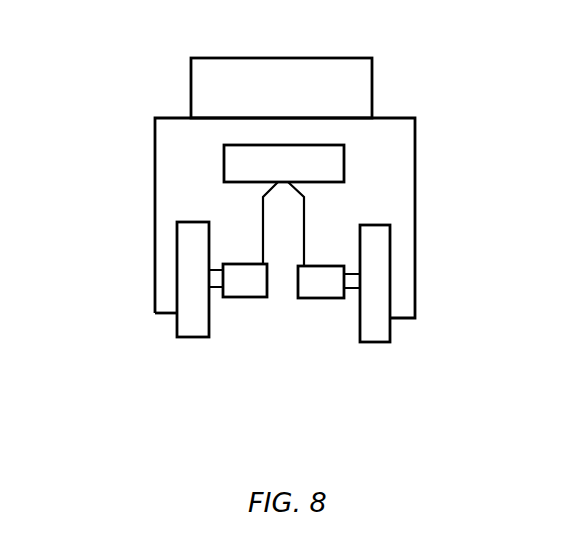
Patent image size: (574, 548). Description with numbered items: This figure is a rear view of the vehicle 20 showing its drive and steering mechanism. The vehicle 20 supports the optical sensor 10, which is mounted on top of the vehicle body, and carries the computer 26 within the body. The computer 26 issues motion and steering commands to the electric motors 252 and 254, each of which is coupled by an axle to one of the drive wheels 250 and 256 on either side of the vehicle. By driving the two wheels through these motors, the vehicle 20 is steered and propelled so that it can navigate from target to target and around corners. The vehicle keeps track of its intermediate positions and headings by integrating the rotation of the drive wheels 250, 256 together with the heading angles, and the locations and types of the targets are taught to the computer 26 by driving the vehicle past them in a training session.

The sensor 10 is at (372, 96).
The vehicle 20 is at (415, 248).
The computer 26 is at (345, 172).
The drive wheel 250 is at (390, 332).
The electric motor 252 is at (318, 298).
The electric motor 254 is at (252, 298).
The drive wheel 256 is at (177, 330).